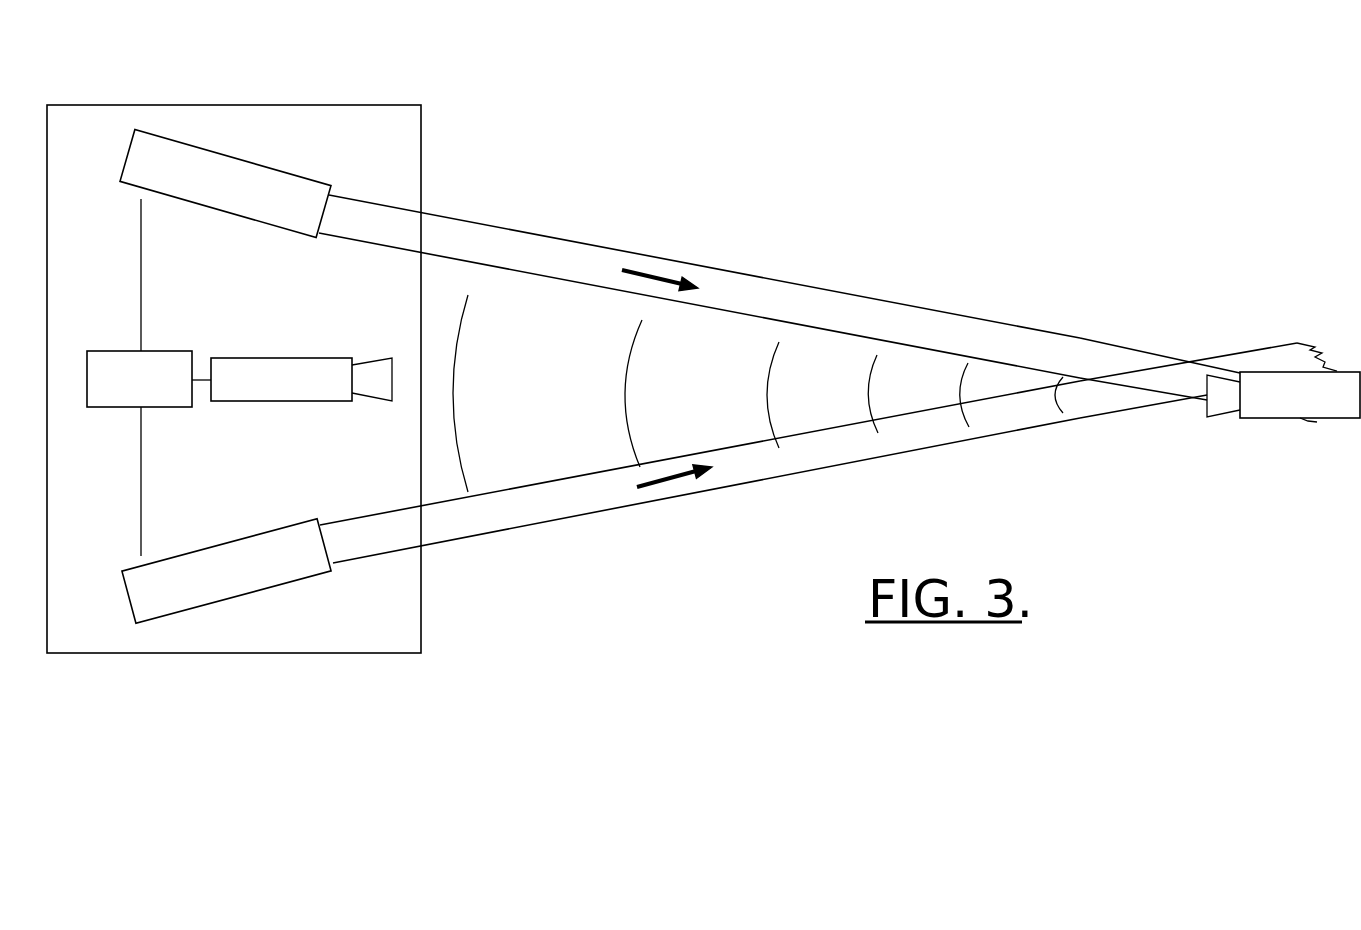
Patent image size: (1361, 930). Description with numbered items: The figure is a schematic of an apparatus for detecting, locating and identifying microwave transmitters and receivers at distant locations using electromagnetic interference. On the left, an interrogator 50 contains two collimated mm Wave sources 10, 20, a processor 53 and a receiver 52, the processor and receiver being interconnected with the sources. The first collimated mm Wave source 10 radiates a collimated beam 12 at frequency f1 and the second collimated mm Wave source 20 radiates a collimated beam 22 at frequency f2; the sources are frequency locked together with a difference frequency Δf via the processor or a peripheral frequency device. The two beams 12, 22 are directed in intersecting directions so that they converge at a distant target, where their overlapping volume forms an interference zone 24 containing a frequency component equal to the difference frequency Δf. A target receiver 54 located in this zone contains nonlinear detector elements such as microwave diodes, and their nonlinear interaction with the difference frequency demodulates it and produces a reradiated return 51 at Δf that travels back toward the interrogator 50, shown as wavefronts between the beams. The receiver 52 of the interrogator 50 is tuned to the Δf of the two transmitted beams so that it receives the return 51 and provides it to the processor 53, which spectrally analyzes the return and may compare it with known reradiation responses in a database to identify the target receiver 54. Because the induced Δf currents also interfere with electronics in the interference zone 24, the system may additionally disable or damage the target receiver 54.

The interrogator 50 is at (234, 360).
The collimated mm Wave source 20 is at (225, 197).
The collimated mm Wave source 10 is at (226, 555).
The processor 53 is at (143, 360).
The receiver 52 is at (301, 360).
The return radiation 51 is at (758, 393).
The collimated beam 22 is at (699, 286).
The collimated beam 12 is at (700, 472).
The interference zone 24 is at (1208, 365).
The target receiver 54 is at (1283, 413).